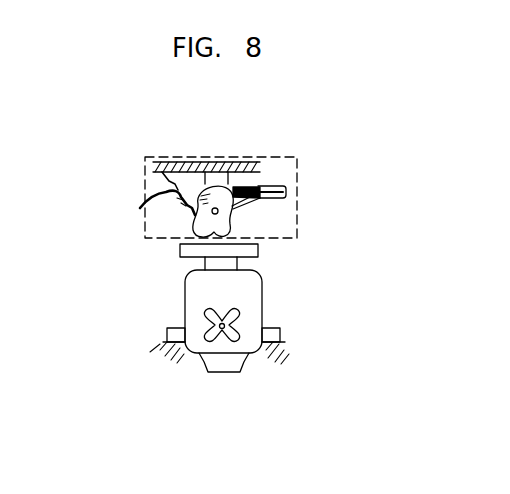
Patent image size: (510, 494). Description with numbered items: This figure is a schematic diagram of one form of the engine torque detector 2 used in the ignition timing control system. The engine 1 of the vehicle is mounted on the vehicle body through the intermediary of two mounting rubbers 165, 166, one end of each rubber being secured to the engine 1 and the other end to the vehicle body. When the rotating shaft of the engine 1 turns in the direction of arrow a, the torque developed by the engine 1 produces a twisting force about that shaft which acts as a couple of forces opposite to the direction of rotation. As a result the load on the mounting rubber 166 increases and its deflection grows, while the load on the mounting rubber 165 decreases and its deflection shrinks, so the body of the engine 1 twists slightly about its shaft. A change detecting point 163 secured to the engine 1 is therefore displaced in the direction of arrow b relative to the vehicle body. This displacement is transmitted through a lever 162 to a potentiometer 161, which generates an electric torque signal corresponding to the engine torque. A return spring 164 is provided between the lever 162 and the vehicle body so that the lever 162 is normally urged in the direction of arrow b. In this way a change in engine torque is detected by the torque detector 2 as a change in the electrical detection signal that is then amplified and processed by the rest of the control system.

The engine 1 is at (262, 311).
The engine torque detector 2 is at (283, 147).
The potentiometer 161 is at (262, 204).
The lever 162 is at (230, 222).
The change detecting point 163 is at (213, 242).
The return spring 164 is at (143, 207).
The mounting rubber 165 is at (284, 341).
The mounting rubber 166 is at (163, 341).
The arrow a is at (247, 308).
The arrow b is at (154, 231).